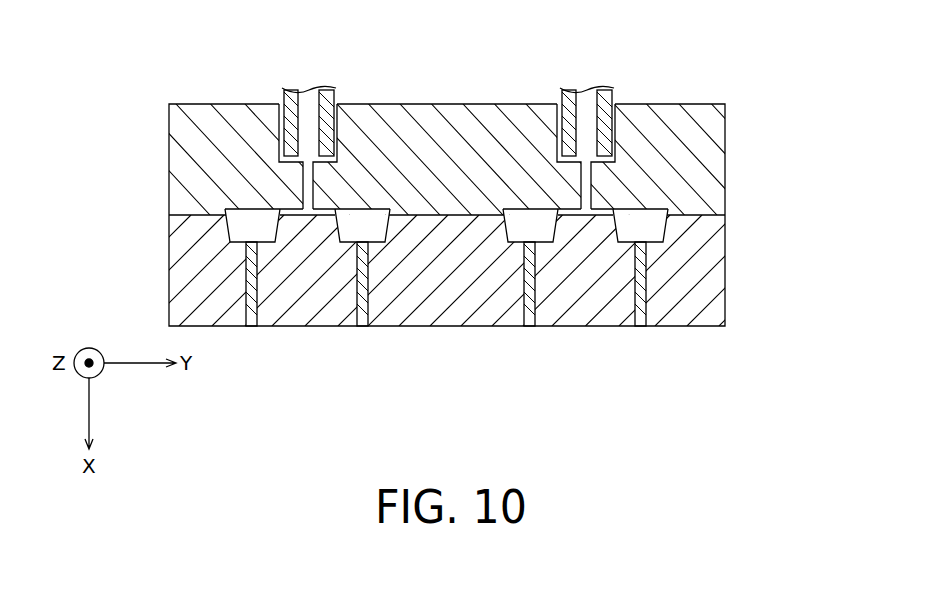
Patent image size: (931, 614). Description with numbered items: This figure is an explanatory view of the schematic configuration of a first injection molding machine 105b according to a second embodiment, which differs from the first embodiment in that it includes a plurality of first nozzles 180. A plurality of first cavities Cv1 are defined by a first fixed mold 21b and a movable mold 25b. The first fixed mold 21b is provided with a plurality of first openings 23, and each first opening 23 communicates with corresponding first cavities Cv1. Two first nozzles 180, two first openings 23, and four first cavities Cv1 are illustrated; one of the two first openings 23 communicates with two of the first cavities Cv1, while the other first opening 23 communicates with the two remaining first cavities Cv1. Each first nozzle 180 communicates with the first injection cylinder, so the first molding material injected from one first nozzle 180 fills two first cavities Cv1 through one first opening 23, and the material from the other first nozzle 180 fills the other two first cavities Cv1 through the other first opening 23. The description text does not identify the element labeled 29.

The first injection molding machine 105b is at (173, 34).
The first nozzle 180 is at (287, 122).
The first opening 23 is at (312, 138).
The first fixed mold 21b is at (708, 126).
The first cavity Cv1 is at (362, 223).
The movable mold 25b is at (688, 300).
The communication hole 29 is at (640, 308).